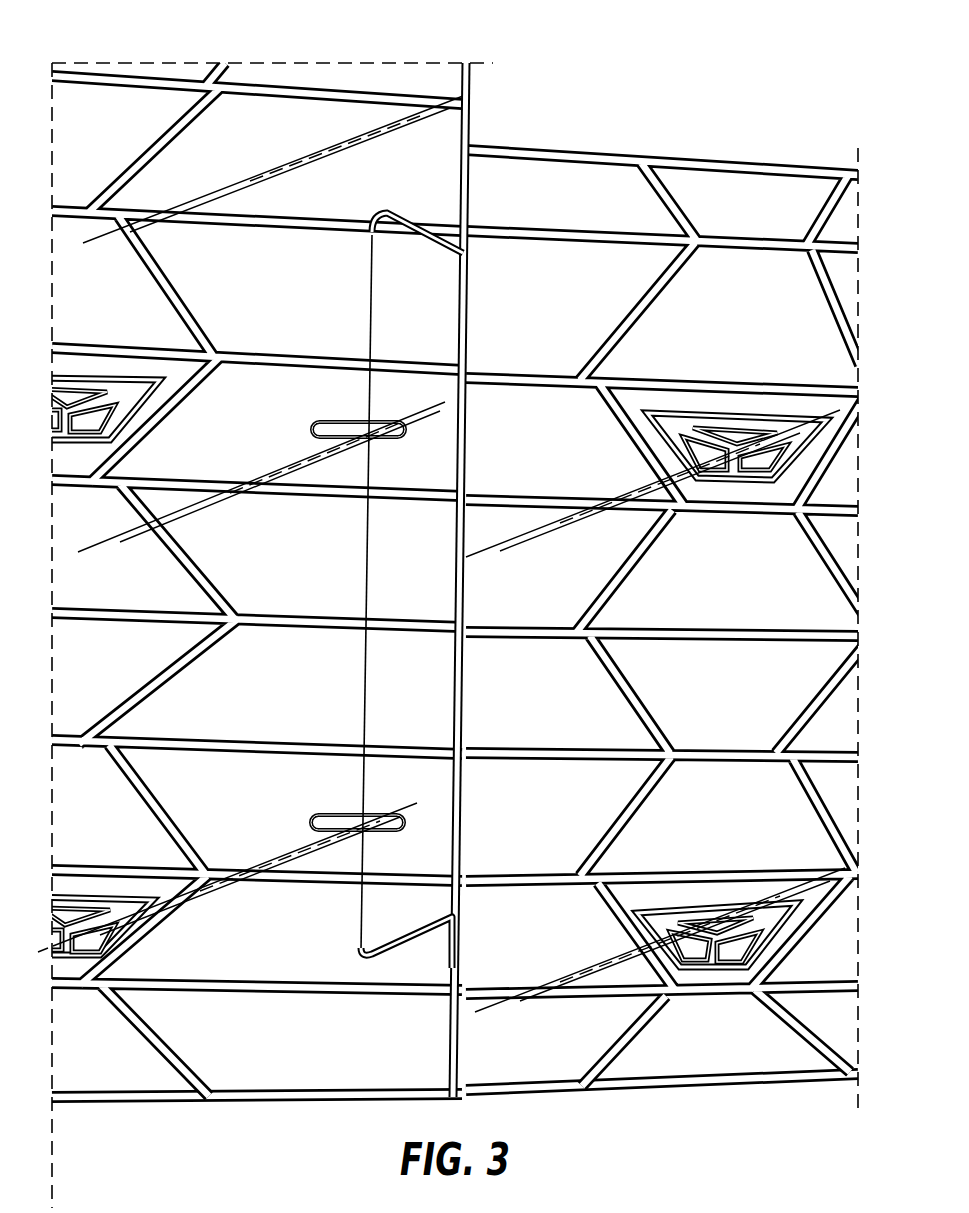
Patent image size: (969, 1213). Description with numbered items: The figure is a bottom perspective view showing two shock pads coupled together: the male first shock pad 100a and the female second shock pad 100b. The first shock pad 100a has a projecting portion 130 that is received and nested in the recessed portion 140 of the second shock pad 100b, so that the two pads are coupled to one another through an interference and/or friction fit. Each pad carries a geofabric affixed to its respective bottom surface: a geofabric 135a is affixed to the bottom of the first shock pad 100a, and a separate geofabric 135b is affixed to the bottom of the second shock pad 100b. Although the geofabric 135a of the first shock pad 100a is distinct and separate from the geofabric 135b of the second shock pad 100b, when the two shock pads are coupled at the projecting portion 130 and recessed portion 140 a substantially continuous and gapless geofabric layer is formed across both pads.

The first shock pad 100a is at (605, 136).
The second shock pad 100b is at (248, 47).
The projecting portion 130 is at (430, 923).
The recessed portion 140 is at (347, 946).
The geofabric 135a is at (577, 1059).
The geofabric 135b is at (300, 1069).